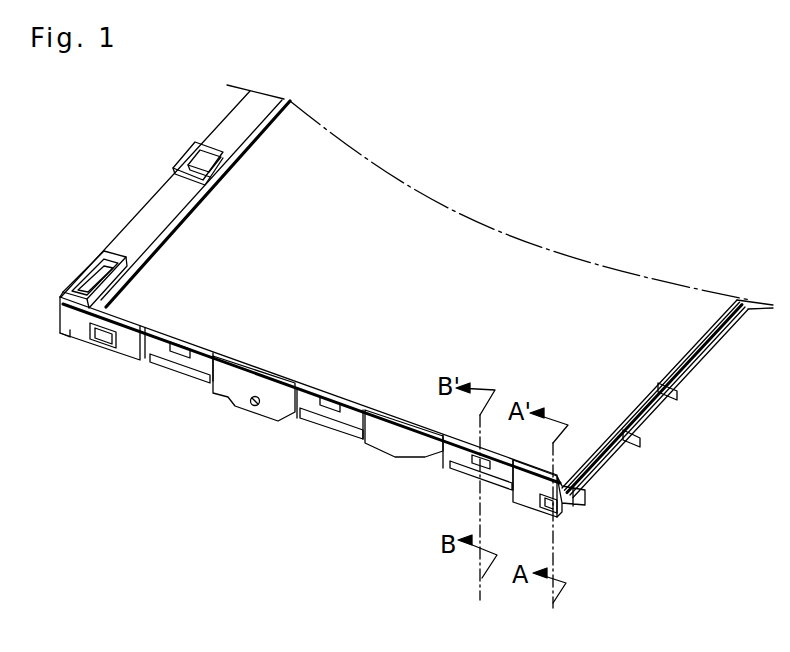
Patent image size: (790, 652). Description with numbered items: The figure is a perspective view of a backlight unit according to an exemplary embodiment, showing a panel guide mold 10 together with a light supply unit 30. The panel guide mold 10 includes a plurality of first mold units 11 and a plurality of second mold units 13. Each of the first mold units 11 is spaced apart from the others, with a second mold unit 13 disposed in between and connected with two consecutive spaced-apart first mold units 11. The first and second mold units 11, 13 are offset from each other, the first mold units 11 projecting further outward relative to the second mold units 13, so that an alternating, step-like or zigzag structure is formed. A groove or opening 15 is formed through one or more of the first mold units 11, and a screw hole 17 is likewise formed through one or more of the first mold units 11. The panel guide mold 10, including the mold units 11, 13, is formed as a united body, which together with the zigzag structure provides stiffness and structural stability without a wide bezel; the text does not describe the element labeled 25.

The panel guide mold 10 is at (311, 364).
The first mold unit 11 is at (527, 498).
The second mold unit 13 is at (456, 462).
The groove or opening 15 is at (88, 343).
The screw hole 17 is at (254, 412).
The opening 25 is at (101, 345).
The light supply unit 30 is at (667, 343).